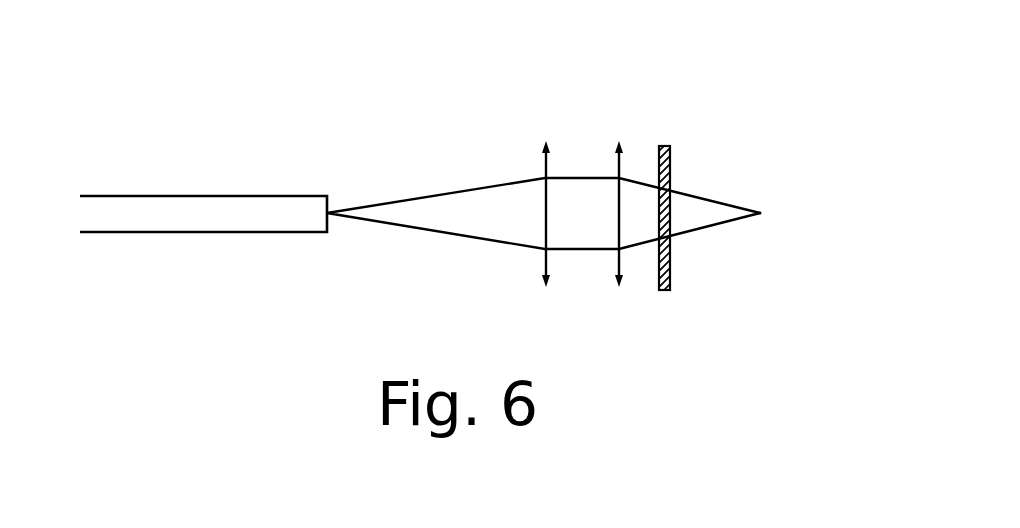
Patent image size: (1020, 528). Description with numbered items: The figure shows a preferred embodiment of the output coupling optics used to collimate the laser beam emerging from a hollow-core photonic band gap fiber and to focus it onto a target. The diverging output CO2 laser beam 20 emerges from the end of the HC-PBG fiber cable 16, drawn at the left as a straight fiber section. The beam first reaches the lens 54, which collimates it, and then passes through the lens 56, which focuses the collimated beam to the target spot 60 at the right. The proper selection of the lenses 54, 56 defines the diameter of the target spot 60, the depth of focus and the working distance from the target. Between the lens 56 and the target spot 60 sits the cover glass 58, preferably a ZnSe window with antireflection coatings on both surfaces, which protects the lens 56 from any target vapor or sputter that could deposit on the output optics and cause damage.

The HC-PBG fiber cable 16 is at (197, 196).
The output CO2 laser beam 20 is at (329, 216).
The lens 54 is at (543, 160).
The lens 56 is at (620, 158).
The cover glass 58 is at (659, 277).
The target spot 60 is at (762, 214).